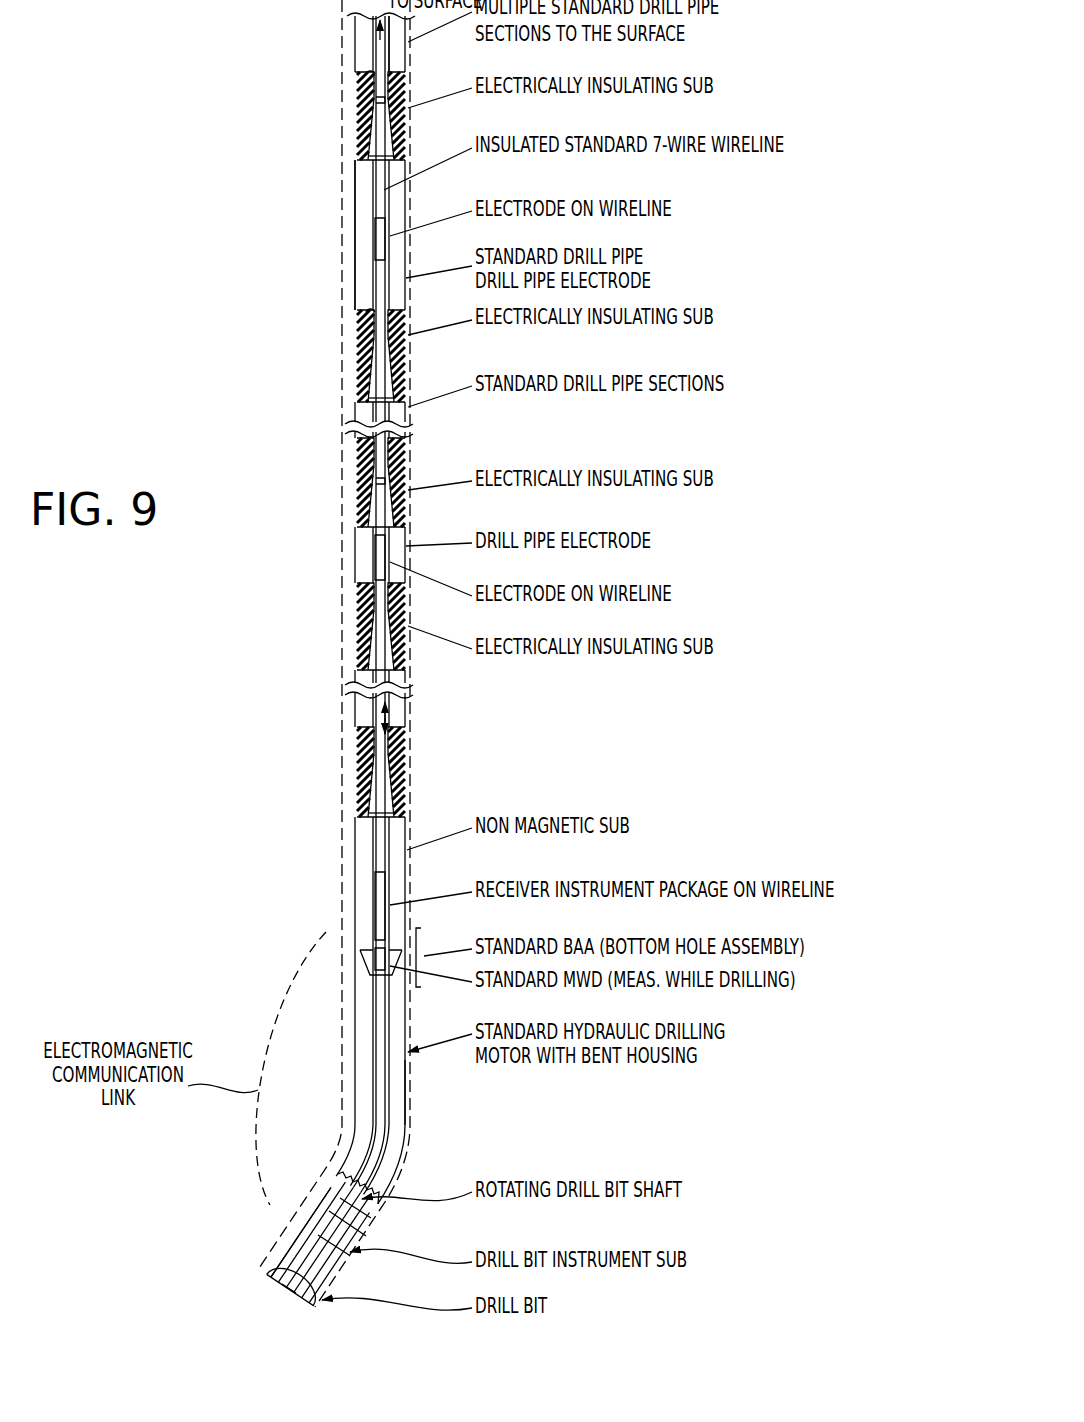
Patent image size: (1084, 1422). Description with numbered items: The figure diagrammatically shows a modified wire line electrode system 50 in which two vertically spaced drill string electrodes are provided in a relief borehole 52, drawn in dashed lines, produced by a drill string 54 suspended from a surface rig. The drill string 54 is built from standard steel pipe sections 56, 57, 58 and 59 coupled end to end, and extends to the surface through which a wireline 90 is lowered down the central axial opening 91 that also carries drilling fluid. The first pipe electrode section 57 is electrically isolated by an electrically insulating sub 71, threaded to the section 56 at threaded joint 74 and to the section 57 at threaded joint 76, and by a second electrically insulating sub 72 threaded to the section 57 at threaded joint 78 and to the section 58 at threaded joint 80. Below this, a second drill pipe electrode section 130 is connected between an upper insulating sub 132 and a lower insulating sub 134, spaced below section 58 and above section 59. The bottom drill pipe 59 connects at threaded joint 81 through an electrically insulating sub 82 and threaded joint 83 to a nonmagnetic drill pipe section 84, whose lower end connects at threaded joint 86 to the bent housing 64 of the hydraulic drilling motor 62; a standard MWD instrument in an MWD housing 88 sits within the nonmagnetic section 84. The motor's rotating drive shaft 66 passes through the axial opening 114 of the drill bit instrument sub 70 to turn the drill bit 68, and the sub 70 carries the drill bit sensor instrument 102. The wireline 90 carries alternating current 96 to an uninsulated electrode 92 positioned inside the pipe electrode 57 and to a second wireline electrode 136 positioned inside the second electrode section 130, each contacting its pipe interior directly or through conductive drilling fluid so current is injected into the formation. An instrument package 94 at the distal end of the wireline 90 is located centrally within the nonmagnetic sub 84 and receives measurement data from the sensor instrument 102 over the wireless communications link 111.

The improved relief well system 50 is at (463, 365).
The relief borehole 52 is at (355, 185).
The drill string 54 is at (357, 205).
The standard steel pipe section 56 is at (363, 42).
The pipe electrode section 57 is at (375, 236).
The steel drill pipe section 58 is at (355, 420).
The bottom drill pipe section 59 is at (355, 668).
The hydraulic drilling motor 62 is at (365, 1025).
The bent housing 64 is at (400, 1104).
The rotating drive shaft 66 is at (350, 1188).
The drill bit 68 is at (287, 1291).
The drill bit instrument sub 70 is at (307, 1250).
The electrically insulating sub 71 is at (360, 118).
The electrically insulating sub 72 is at (360, 350).
The threaded joint 74 is at (368, 72).
The threaded joint 76 is at (362, 158).
The threaded joint 78 is at (362, 322).
The threaded joint 80 is at (362, 388).
The threaded joint 81 is at (388, 730).
The electrically insulating sub 82 is at (362, 752).
The threaded joint 83 is at (362, 805).
The nonmagnetic drill pipe section 84 is at (358, 840).
The threaded joint 86 is at (372, 966).
The MWD housing 88 is at (372, 908).
The wireline 90 is at (375, 98).
The central axial opening 91 is at (392, 58).
The wireline electrode 92 is at (375, 250).
The instrument package 94 is at (378, 892).
The alternating current 96 is at (388, 705).
The drill bit sensor instrument 102 is at (332, 1260).
The communications link 111 is at (262, 1118).
The axial opening 114 is at (360, 1199).
The second drill pipe electrode section 130 is at (358, 540).
The upper insulating sub 132 is at (366, 505).
The lower insulating sub 134 is at (362, 618).
The second wireline electrode 136 is at (375, 575).